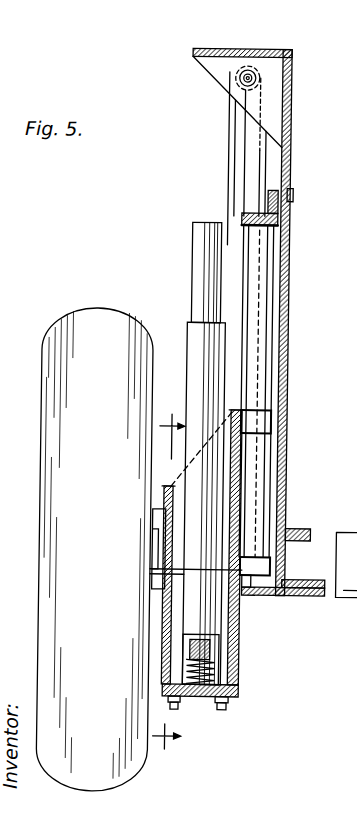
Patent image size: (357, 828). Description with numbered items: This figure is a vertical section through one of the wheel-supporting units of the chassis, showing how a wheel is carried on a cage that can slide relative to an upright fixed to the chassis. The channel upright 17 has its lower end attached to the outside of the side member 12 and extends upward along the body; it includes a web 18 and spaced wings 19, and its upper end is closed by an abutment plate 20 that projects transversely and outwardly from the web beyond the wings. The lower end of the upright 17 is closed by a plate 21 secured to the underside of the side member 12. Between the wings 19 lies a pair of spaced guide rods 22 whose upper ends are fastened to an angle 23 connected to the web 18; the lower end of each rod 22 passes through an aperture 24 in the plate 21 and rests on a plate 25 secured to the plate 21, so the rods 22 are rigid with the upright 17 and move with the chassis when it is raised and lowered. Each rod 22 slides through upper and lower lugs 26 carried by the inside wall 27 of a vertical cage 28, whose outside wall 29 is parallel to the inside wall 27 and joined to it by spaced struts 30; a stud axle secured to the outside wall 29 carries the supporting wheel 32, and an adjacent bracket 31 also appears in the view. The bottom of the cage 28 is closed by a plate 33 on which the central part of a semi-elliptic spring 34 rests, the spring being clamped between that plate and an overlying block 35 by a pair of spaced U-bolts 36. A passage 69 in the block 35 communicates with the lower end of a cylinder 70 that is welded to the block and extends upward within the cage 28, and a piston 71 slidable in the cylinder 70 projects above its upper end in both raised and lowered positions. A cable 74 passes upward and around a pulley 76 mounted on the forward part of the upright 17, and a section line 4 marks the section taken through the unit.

The abutment plate 20 is at (220, 49).
The pulley 76 is at (257, 77).
The cable 74 is at (224, 108).
The wings 19 is at (240, 157).
The web 18 is at (287, 160).
The angle 23 is at (248, 212).
The piston 71 is at (190, 262).
The guide rods 22 is at (260, 283).
The cylinder 70 is at (186, 335).
The channel upright 17 is at (287, 323).
The lugs 26 is at (271, 418).
The struts 30 is at (170, 487).
The supporting wheel 32 is at (43, 505).
The bracket 31 is at (155, 530).
The side member 12 is at (346, 531).
The outside wall 29 is at (168, 605).
The plate 21 is at (316, 597).
The plate 25 is at (250, 598).
The aperture 24 is at (270, 608).
The block 35 is at (193, 652).
The passage 69 is at (226, 662).
The inside wall 27 is at (243, 690).
The vertical cage 28 is at (248, 696).
The plate 33 is at (204, 700).
The U-bolts 36 is at (226, 710).
The semi-elliptic spring 34 is at (188, 705).
The section line 4 is at (190, 586).